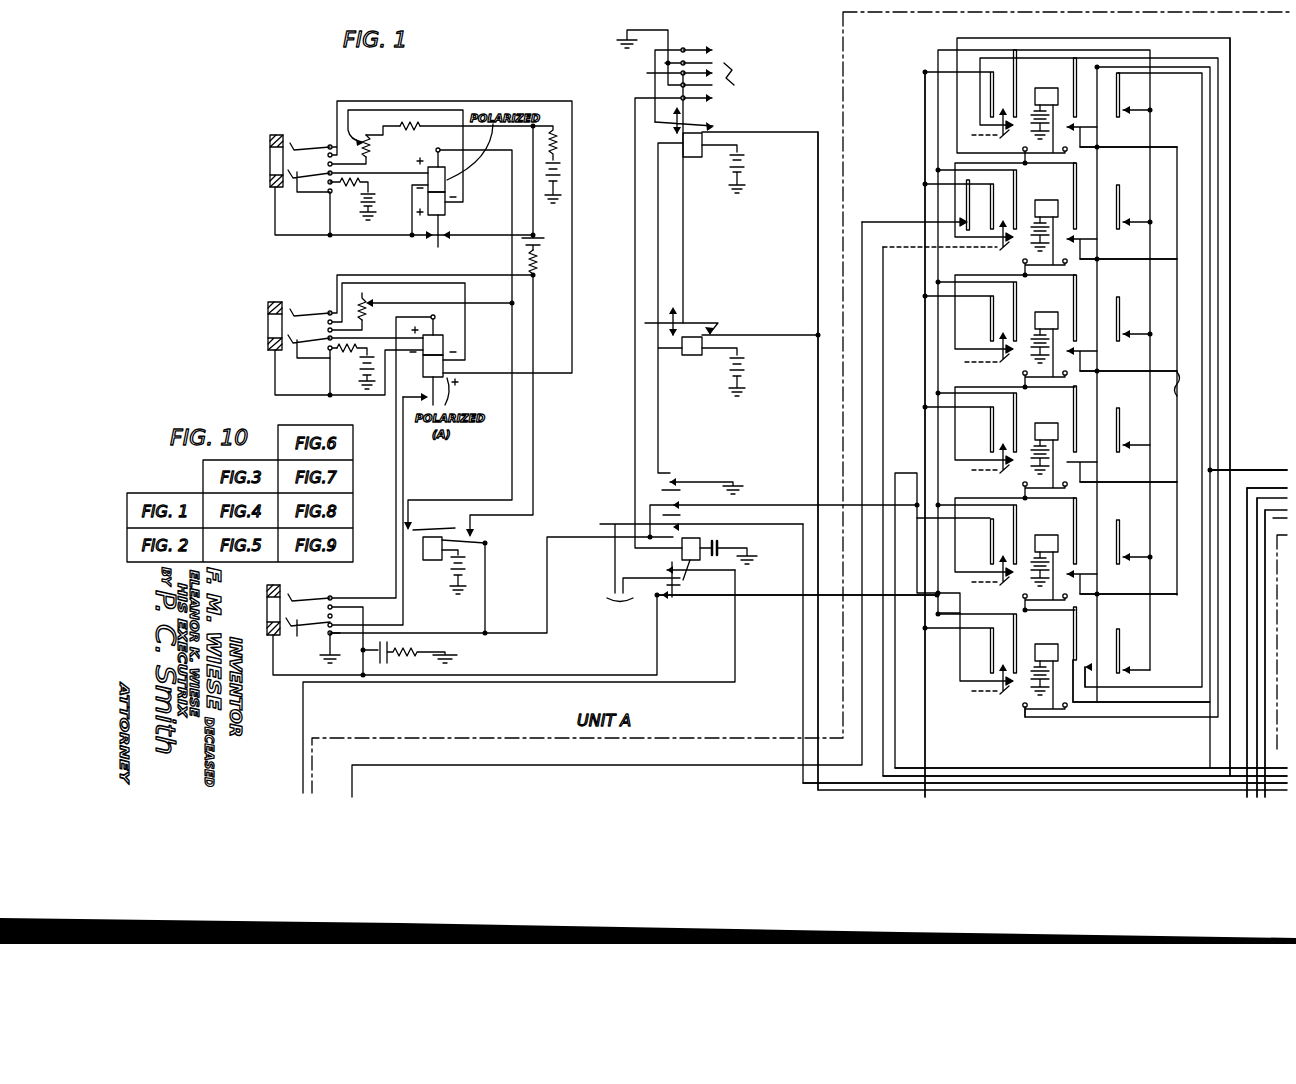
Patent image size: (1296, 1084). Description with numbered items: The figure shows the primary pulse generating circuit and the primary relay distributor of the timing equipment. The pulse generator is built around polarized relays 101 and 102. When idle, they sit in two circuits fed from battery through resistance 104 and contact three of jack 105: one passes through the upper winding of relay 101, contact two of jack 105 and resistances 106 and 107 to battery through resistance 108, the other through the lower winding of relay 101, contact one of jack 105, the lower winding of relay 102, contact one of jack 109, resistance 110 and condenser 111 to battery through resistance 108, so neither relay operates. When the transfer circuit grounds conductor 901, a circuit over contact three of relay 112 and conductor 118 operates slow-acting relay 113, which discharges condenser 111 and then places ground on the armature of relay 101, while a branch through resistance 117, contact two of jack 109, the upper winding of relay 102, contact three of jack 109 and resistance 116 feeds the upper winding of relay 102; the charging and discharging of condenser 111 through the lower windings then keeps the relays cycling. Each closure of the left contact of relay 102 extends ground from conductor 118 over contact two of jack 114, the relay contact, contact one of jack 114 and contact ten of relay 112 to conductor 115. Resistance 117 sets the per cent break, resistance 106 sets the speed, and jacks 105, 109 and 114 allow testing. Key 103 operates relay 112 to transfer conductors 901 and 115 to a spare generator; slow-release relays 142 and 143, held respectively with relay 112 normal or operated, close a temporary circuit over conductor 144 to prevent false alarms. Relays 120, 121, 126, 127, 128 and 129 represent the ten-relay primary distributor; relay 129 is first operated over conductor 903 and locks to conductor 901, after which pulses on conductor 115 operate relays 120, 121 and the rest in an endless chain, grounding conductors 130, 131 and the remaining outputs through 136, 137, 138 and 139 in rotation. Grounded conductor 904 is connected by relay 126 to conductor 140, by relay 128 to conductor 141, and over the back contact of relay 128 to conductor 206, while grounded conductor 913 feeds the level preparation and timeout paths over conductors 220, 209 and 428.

The polarized relay 101 is at (447, 208).
The polarized relay 102 is at (446, 368).
The key 103 is at (729, 77).
The resistance 104 is at (348, 190).
The jack 105 is at (295, 148).
The adjustable resistance 106 is at (352, 109).
The resistance 107 is at (406, 132).
The resistance 108 is at (557, 136).
The jack 109 is at (292, 318).
The resistance 110 is at (540, 266).
The condenser 111 is at (548, 240).
The relay 112 is at (681, 600).
The slow-to-operate relay 113 is at (432, 561).
The jack 114 is at (297, 602).
The conductor 115 is at (781, 596).
The resistance 116 is at (330, 356).
The adjustable resistance 117 is at (374, 303).
The conductor 118 is at (549, 582).
The relay 120 is at (1057, 634).
The relay 121 is at (1057, 525).
The relay 126 is at (1057, 413).
The relay 127 is at (1057, 302).
The relay 128 is at (1057, 190).
The relay 129 is at (1057, 78).
The conductor 130 is at (1180, 686).
The conductor 131 is at (1150, 594).
The conductor 136 is at (1150, 482).
The conductor 137 is at (1150, 371).
The conductor 138 is at (1150, 259).
The conductor 139 is at (1150, 147).
The conductor 140 is at (1106, 776).
The conductor 141 is at (1146, 783).
The slow-release relay 142 is at (681, 158).
The slow-release relay 143 is at (685, 335).
The conductor 144 is at (818, 452).
The conductor 206 is at (915, 213).
The conductor 209 is at (1276, 470).
The conductor 220 is at (1250, 748).
The conductor 428 is at (1244, 470).
The conductor 901 is at (1060, 750).
The conductor 903 is at (1230, 90).
The conductor 904 is at (925, 740).
The conductor 913 is at (1249, 740).